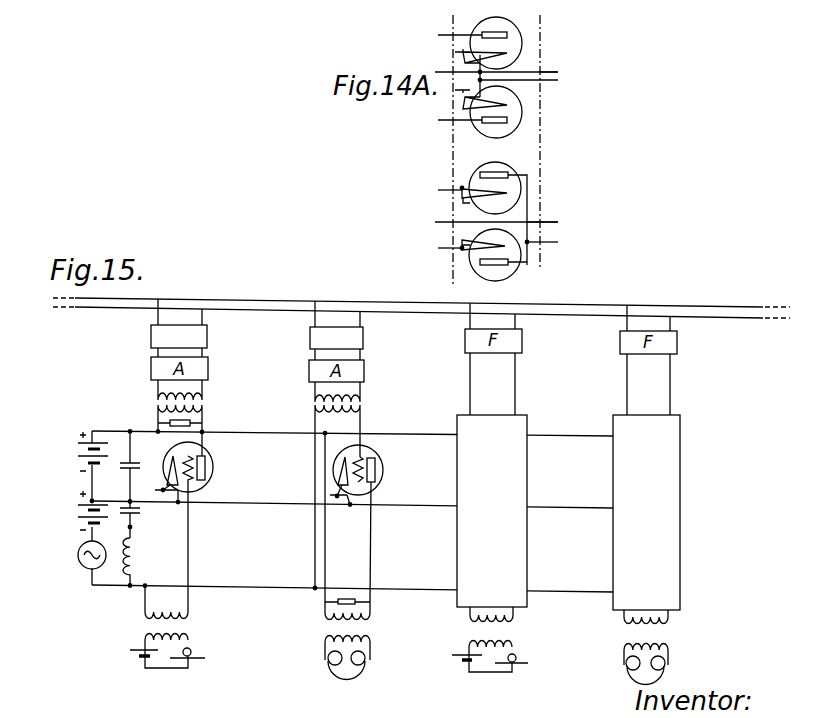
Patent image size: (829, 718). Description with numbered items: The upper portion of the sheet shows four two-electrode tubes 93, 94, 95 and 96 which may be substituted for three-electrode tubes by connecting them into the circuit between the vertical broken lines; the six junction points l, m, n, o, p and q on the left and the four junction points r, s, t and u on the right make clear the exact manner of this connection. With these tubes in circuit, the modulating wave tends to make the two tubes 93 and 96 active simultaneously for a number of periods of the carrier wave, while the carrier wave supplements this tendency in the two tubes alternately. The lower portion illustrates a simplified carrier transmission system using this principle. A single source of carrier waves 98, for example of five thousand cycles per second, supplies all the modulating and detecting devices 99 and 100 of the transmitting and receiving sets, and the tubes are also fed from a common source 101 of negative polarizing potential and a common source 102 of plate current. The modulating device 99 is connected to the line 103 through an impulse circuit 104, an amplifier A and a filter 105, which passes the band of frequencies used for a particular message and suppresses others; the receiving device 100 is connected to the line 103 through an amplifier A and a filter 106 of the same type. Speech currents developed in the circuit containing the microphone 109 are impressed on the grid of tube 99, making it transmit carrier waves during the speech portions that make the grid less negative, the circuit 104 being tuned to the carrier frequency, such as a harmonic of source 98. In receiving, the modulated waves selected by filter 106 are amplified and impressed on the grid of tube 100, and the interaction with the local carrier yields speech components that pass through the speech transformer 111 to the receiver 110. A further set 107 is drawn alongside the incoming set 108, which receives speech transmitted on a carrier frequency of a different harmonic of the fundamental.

In FIG. 14A, the two-electrode tube 93 is at (509, 23).
In FIG. 14A, the two-electrode tube 94 is at (513, 121).
In FIG. 14A, the two-electrode tube 95 is at (482, 161).
In FIG. 14A, the two-electrode tube 96 is at (481, 272).
In FIG. 14A, the junction point l is at (460, 26).
In FIG. 14A, the junction point m is at (496, 64).
In FIG. 14A, the junction point n is at (460, 127).
In FIG. 14A, the junction point o is at (451, 179).
In FIG. 14A, the junction point p is at (496, 211).
In FIG. 14A, the junction point q is at (450, 258).
In FIG. 14A, the junction point r is at (519, 88).
In FIG. 14A, the junction point s is at (549, 63).
In FIG. 14A, the junction point t is at (542, 231).
In FIG. 14A, the junction point u is at (542, 250).
In FIG. 15, the source of carrier waves 98 is at (79, 559).
In FIG. 15, the modulating device 99 is at (212, 460).
In FIG. 15, the receiving device 100 is at (376, 449).
In FIG. 15, the source of negative polarizing potential 101 is at (80, 501).
In FIG. 15, the source of plate current 102 is at (82, 444).
In FIG. 15, the line 103 is at (443, 303).
In FIG. 15, the impulse circuit 104 is at (195, 409).
In FIG. 15, the filter 105 is at (208, 338).
In FIG. 15, the filter 106 is at (363, 338).
In FIG. 15, the receiving apparatus 107 is at (492, 511).
In FIG. 15, the incoming set 108 is at (646, 512).
In FIG. 15, the microphone 109 is at (172, 647).
In FIG. 15, the receiver 110 is at (328, 647).
In FIG. 15, the speech transformer 111 is at (365, 632).